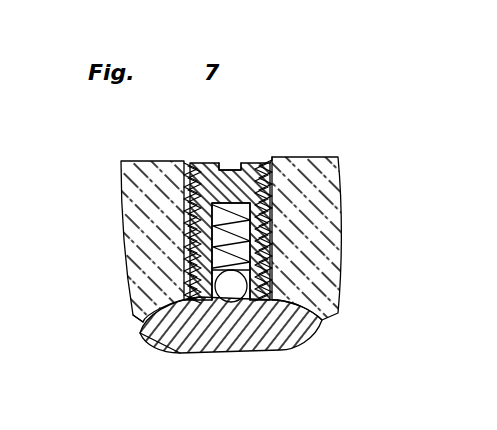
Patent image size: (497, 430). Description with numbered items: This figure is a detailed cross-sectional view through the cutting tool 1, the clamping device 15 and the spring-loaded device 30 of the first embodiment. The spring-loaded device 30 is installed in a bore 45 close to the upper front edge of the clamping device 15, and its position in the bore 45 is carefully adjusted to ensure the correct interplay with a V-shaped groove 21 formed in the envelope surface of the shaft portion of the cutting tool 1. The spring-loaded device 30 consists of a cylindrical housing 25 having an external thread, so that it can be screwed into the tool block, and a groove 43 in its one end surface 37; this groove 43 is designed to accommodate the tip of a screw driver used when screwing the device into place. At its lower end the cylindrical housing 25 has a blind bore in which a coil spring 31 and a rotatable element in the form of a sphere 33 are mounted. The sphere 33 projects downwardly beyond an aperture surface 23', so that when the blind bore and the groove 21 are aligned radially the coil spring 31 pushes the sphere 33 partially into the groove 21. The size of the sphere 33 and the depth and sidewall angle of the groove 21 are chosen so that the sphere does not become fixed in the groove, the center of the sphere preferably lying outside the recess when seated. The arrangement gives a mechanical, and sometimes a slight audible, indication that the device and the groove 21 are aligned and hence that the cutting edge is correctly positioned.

The cutting tool 1 is at (153, 340).
The clamping device 15 is at (326, 150).
The groove 21 is at (297, 337).
The aperture surface 23' is at (105, 344).
The cylindrical housing 25 is at (190, 183).
The spring-loaded device 30 is at (186, 209).
The coil spring 31 is at (273, 222).
The sphere 33 is at (323, 323).
The end surface 37 is at (207, 160).
The groove 43 is at (232, 160).
The bore 45 is at (278, 158).